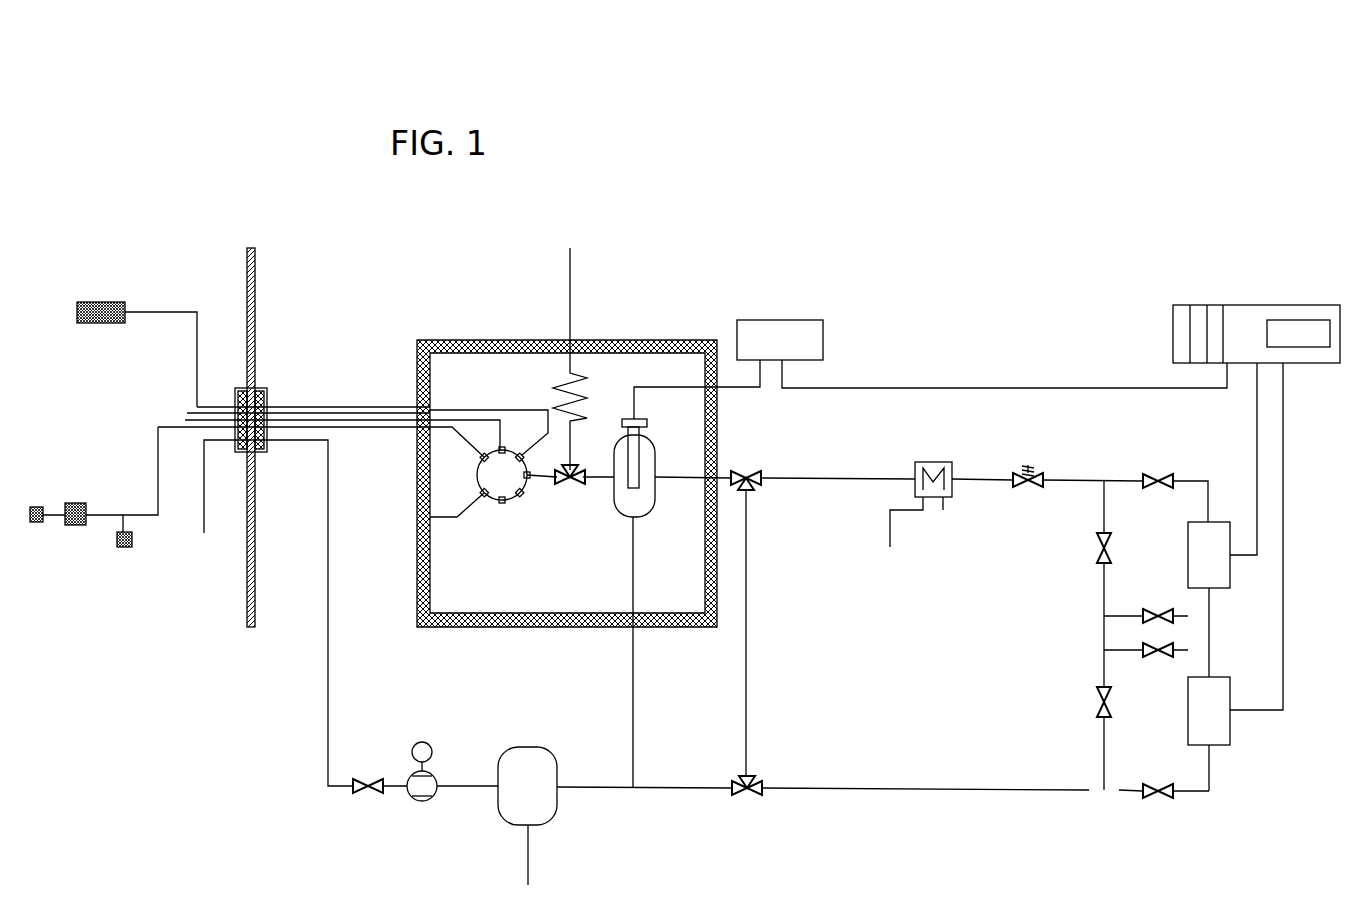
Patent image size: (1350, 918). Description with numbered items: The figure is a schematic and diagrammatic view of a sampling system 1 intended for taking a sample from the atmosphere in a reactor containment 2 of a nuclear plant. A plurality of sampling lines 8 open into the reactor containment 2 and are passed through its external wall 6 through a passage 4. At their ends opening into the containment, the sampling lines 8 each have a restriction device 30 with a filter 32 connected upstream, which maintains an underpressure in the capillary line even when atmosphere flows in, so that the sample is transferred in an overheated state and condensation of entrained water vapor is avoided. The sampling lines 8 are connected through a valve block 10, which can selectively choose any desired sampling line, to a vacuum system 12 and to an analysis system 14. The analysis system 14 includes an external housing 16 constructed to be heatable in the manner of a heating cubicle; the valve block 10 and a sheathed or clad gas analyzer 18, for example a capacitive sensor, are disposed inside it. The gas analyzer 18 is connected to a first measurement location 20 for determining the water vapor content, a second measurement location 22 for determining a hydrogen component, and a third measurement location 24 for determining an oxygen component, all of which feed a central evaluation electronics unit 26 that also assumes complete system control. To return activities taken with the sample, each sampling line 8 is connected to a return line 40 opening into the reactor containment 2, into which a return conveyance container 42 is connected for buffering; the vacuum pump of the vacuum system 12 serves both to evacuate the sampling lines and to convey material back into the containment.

The sampling system 1 is at (915, 258).
The reactor containment 2 is at (112, 262).
The passage 4 is at (258, 391).
The external wall 6 is at (256, 267).
The sampling lines 8 is at (376, 412).
The valve block 10 is at (510, 500).
The vacuum system 12 is at (433, 769).
The analysis system 14 is at (1003, 352).
The external housing 16 is at (630, 340).
The gas analyzer 18 is at (648, 515).
The first measurement location 20 is at (779, 320).
The second measurement location 22 is at (1221, 522).
The third measurement location 24 is at (1218, 677).
The central evaluation electronics unit 26 is at (1257, 305).
The restriction device 30 is at (77, 313).
The filter 32 is at (77, 305).
The return line 40 is at (204, 520).
The return conveyance container 42 is at (528, 747).